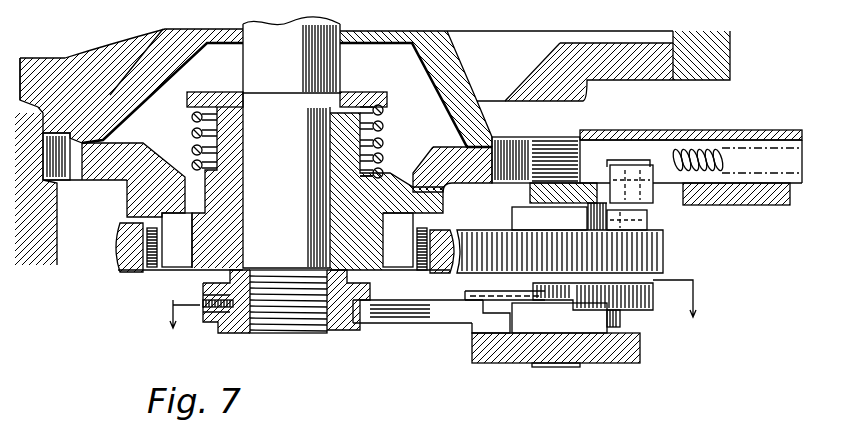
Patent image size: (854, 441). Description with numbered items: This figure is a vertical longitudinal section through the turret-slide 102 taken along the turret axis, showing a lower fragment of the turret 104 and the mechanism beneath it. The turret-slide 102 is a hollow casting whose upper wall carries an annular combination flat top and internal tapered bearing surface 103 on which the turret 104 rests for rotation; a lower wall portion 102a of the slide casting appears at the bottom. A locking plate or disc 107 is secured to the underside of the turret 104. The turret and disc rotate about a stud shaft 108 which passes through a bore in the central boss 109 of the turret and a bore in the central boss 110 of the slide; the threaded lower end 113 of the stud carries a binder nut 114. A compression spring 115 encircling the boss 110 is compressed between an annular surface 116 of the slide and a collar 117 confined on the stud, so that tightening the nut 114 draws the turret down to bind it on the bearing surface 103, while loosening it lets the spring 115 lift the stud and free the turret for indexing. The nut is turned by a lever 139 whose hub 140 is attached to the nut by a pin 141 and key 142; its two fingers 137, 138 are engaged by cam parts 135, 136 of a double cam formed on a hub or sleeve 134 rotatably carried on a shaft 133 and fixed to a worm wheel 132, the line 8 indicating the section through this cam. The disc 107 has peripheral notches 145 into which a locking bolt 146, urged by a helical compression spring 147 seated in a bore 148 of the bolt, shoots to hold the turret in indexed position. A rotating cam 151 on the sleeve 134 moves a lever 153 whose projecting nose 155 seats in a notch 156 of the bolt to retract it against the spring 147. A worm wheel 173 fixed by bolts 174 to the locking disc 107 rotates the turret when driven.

The turret-slide 102 is at (186, 62).
The housing plate 102a is at (641, 350).
The bearing surface 103 is at (85, 92).
The turret 104 is at (730, 33).
The locking plate 107 is at (119, 150).
The stud shaft 108 is at (325, 57).
The central boss of the turret 109 is at (268, 94).
The central boss of the turret-slide 110 is at (242, 92).
The lower end of the stud 113 is at (292, 334).
The binder nut 114 is at (240, 334).
The compression spring 115 is at (383, 114).
The annular surface 116 is at (386, 173).
The collar 117 is at (350, 98).
The worm wheel 132 is at (664, 252).
The shaft 133 is at (568, 365).
The hub or sleeve 134 is at (559, 270).
The cam part 135 is at (651, 296).
The cam part 136 is at (621, 322).
The finger 137 is at (475, 296).
The finger 138 is at (507, 318).
The lever 139 is at (410, 324).
The hub 140 is at (226, 331).
The pin 141 is at (203, 308).
The key 142 is at (346, 331).
The notches 145 is at (57, 181).
The locking bolt 146 is at (583, 153).
The helical compression spring 147 is at (736, 147).
The bore 148 is at (718, 146).
The rotating cam 151 is at (512, 222).
The lever 153 is at (649, 222).
The projecting nose 155 is at (643, 167).
The notch 156 is at (629, 171).
The worm wheel 173 is at (119, 273).
The bolts 174 is at (152, 268).
The section line 8- 8 is at (433, 299).